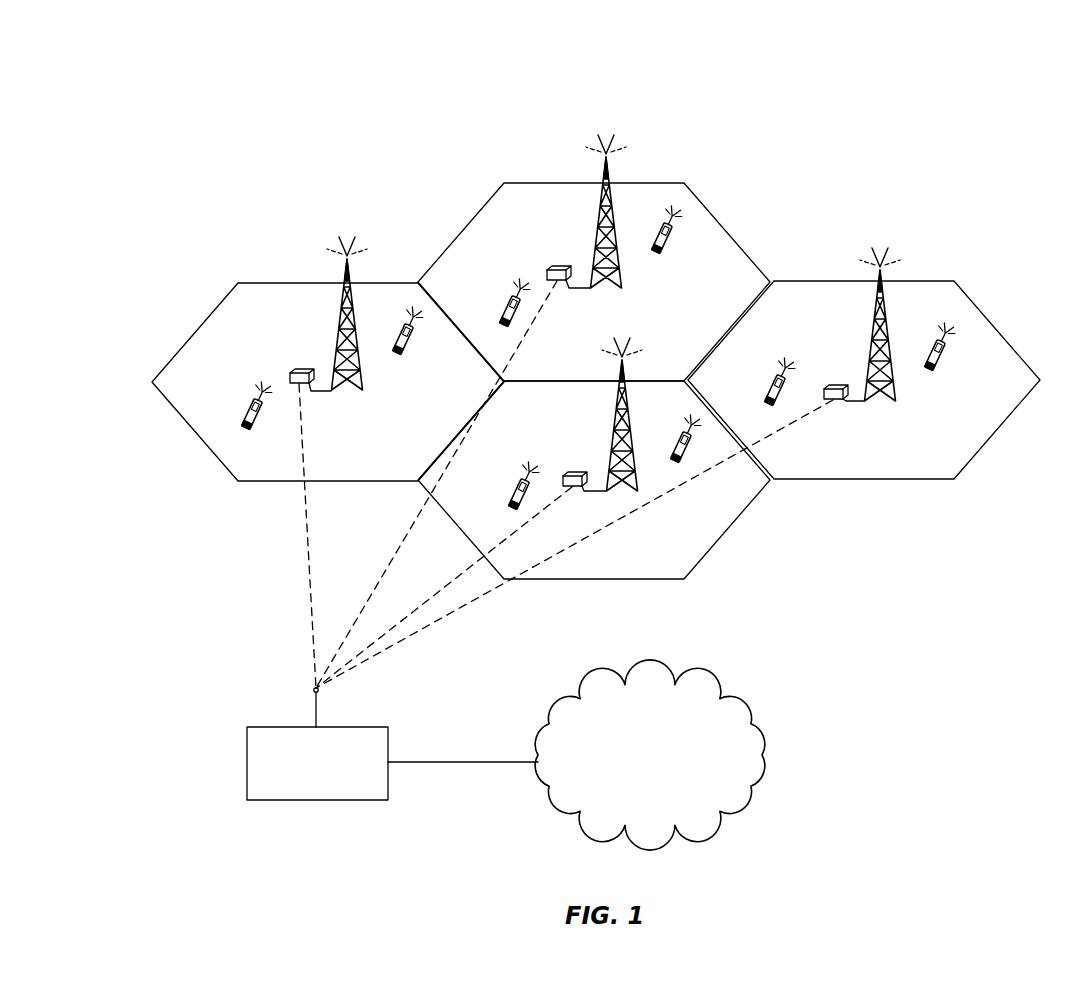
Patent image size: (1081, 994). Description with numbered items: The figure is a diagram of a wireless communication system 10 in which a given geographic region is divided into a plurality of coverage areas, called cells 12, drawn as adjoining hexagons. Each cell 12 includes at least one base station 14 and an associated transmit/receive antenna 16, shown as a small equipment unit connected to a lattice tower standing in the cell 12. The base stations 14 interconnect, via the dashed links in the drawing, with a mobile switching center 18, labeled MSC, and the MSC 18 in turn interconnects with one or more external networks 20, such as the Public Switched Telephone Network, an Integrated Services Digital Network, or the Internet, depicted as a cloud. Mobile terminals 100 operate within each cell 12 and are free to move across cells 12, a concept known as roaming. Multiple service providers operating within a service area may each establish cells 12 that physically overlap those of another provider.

The wireless communication system 10 is at (1018, 137).
The cell 12 is at (346, 456).
The base station 14 is at (300, 372).
The transmit/receive antenna 16 is at (362, 390).
The mobile switching center 18 is at (305, 794).
The external network 20 is at (637, 804).
The mobile terminal 100 is at (245, 408).